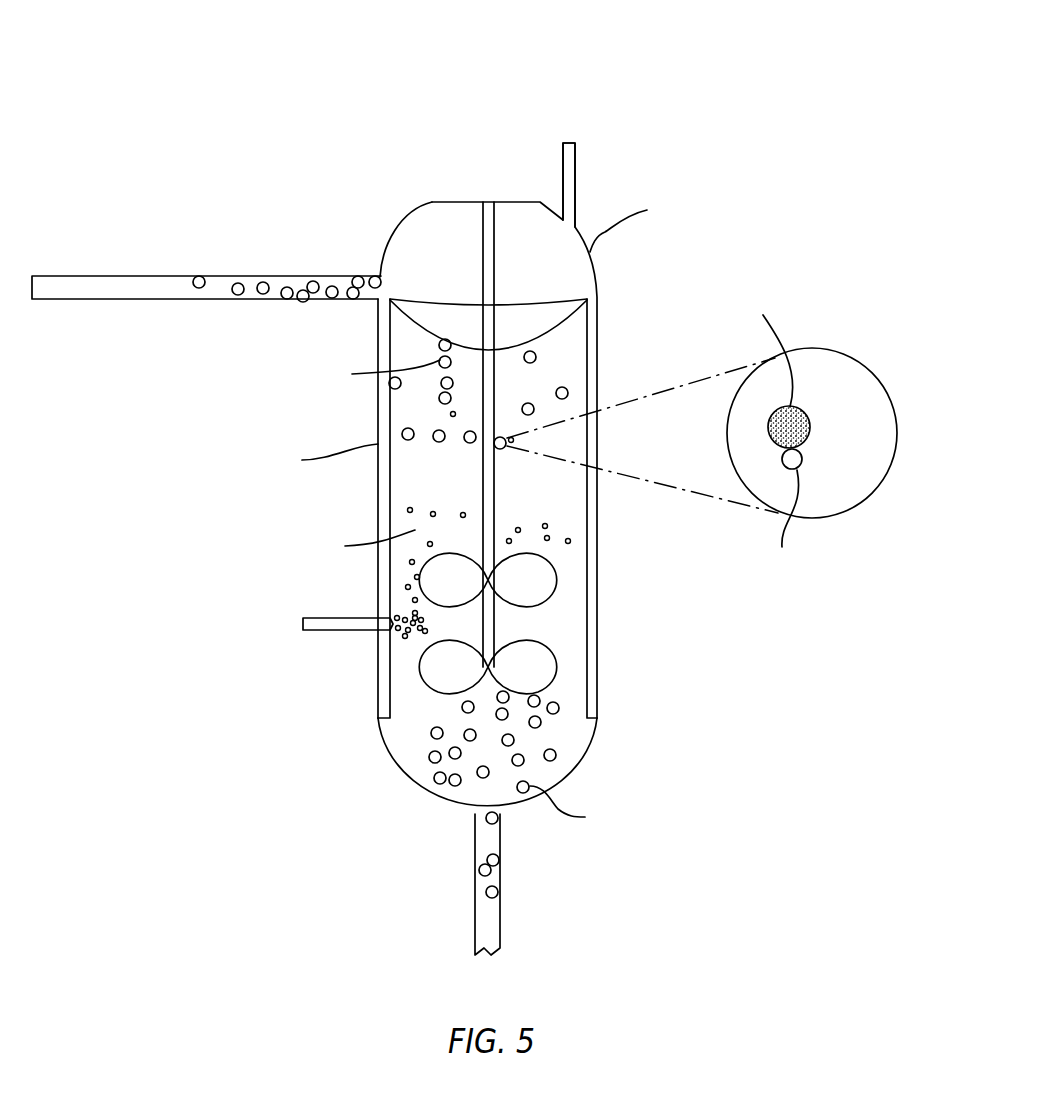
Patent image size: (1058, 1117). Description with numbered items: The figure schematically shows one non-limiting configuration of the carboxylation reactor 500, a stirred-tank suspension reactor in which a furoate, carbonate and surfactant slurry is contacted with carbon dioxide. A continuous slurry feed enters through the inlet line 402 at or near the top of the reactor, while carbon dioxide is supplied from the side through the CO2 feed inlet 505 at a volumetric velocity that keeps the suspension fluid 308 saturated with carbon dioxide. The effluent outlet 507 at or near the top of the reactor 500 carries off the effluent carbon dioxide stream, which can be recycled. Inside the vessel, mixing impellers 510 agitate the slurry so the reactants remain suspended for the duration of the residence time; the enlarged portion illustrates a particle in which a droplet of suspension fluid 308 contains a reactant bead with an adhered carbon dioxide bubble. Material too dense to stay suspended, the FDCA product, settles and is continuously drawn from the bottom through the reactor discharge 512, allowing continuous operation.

The carboxylation reactor 500 is at (622, 95).
The effluent outlet 507 is at (563, 153).
The slurry feed inlet line 402 is at (134, 276).
The suspension fluid 308 is at (858, 397).
The CO2 feed inlet 505 is at (303, 624).
The mixing impellers 510 is at (555, 582).
The reactor discharge 512 is at (477, 919).